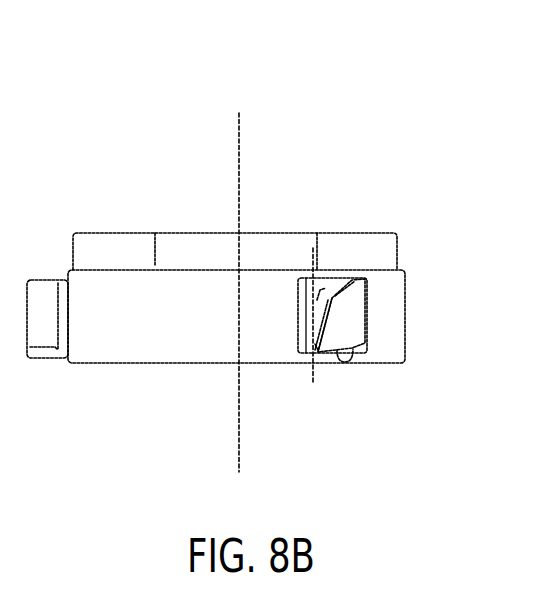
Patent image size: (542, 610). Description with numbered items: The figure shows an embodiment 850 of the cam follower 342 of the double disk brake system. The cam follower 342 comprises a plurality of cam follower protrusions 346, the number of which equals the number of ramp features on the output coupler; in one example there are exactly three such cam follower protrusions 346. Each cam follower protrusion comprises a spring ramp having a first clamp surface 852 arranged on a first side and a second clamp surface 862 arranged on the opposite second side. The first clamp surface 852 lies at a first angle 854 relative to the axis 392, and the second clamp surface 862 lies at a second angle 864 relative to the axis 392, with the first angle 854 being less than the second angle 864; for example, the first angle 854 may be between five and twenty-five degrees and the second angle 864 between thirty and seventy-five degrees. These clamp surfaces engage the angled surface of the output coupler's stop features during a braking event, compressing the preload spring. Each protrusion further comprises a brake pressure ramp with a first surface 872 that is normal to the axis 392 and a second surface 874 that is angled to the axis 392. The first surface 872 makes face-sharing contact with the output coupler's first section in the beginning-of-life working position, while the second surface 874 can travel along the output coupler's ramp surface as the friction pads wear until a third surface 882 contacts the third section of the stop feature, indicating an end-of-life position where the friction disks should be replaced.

The embodiment of the cam follower 850 is at (345, 95).
The cam follower 342 is at (273, 187).
The axis 392 is at (240, 432).
The third surface 882 is at (368, 308).
The second angle 864 is at (312, 288).
The cam follower protrusions 346 is at (333, 338).
The second clamp surface 862 is at (347, 282).
The first angle 854 is at (315, 318).
The first clamp surface 852 is at (318, 344).
The first surface 872 is at (322, 343).
The second surface 874 is at (360, 344).